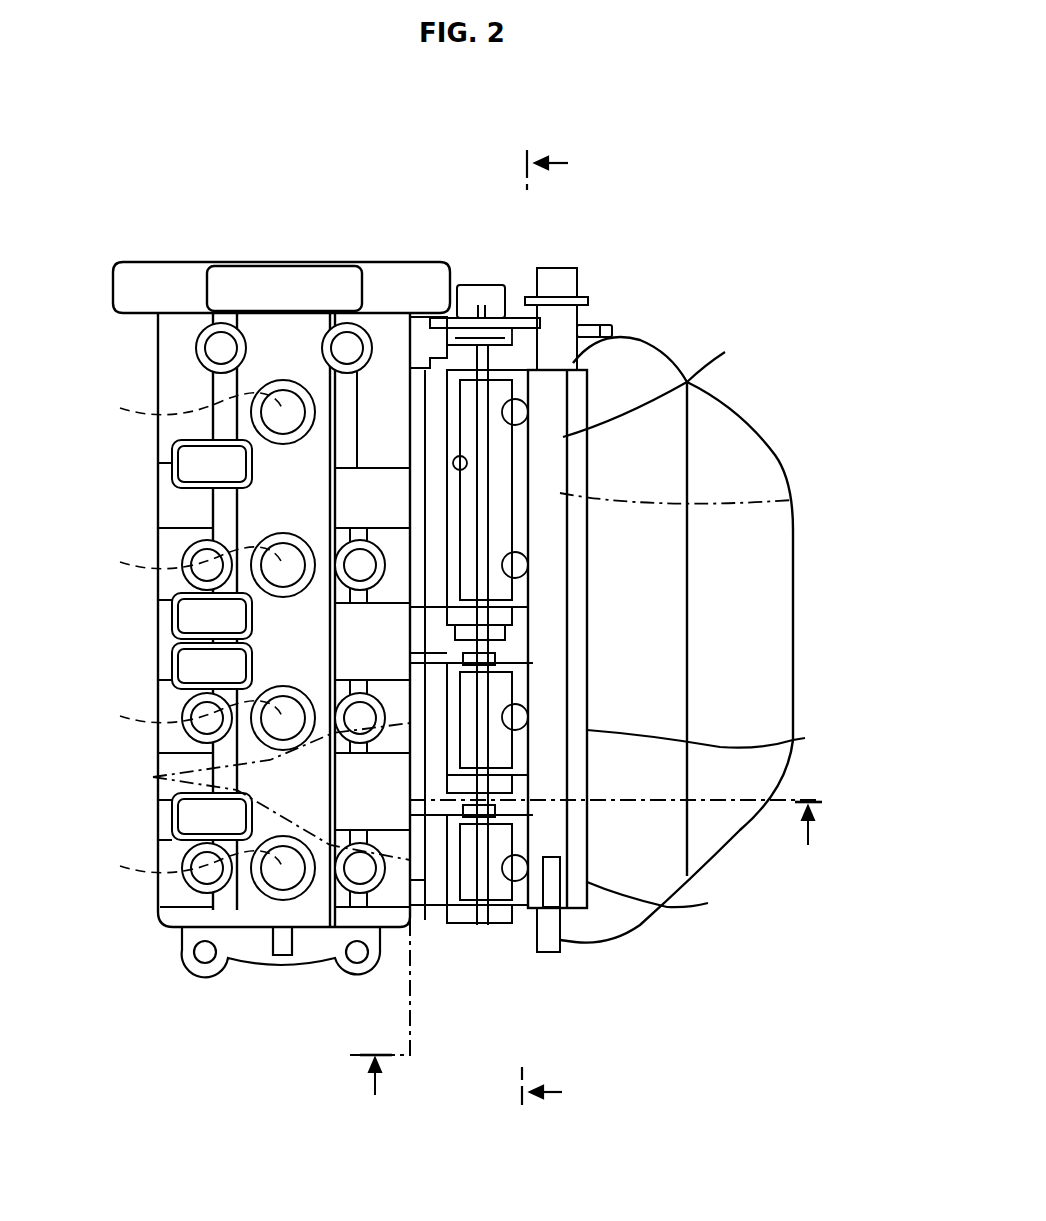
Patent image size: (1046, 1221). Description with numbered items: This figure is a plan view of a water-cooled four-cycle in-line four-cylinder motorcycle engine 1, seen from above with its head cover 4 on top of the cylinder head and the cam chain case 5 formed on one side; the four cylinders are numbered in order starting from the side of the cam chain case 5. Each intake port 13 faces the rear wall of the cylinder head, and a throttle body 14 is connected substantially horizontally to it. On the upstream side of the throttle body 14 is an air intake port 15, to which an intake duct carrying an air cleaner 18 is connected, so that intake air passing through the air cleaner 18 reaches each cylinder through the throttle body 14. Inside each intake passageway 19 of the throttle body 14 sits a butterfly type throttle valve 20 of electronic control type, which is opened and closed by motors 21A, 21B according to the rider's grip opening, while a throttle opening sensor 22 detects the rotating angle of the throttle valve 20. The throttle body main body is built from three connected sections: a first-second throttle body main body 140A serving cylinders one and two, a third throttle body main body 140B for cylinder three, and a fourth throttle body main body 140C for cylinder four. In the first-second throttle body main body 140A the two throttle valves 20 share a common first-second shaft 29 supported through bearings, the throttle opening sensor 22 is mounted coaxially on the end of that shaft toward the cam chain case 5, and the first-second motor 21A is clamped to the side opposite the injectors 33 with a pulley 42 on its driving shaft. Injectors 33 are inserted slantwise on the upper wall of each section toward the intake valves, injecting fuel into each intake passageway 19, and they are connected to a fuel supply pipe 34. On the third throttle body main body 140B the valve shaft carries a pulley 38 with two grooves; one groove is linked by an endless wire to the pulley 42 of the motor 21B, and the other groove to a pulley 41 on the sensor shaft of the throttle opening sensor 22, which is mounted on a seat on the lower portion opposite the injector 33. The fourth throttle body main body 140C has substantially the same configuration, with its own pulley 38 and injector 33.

The engine 1 is at (311, 238).
The head cover 4 is at (158, 356).
The cam chain case 5 is at (140, 262).
The intake port 13 is at (410, 938).
The throttle body 14 is at (481, 284).
The air intake port 15 is at (542, 368).
The air cleaner 18 is at (750, 420).
The intake passageway 19 is at (432, 932).
The throttle valve 20 is at (560, 360).
The first-second motor 21A is at (793, 500).
The motor 21B is at (227, 791).
The throttle opening sensor 22 is at (500, 292).
The first-second shaft 29 is at (563, 468).
The injector 33 is at (587, 383).
The fuel supply pipe 34 is at (587, 610).
The pulley 38 is at (404, 792).
The pulley 41 is at (585, 766).
The pulley 42 is at (437, 1010).
The first-second throttle body main body 140A is at (714, 388).
The third throttle body main body 140B is at (766, 739).
The fourth throttle body main body 140C is at (721, 900).